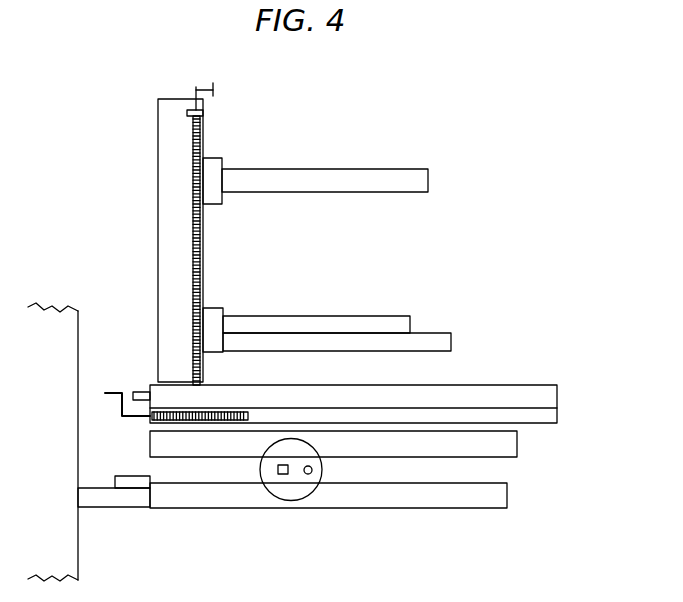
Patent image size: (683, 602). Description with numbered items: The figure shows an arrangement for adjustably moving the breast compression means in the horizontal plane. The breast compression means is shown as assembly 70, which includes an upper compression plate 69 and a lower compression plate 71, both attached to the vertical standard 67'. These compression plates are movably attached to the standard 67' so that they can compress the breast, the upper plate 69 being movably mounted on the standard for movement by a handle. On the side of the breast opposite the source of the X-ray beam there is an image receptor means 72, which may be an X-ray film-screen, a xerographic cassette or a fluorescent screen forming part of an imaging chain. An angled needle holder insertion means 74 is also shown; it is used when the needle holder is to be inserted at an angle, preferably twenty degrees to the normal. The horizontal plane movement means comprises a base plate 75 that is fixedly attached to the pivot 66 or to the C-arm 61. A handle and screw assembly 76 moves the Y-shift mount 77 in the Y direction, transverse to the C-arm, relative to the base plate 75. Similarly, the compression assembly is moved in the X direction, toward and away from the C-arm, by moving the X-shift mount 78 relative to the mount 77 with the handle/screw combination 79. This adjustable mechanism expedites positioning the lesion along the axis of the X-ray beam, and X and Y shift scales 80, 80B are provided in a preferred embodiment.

The C-arm 61 is at (57, 392).
The pivot 66 is at (100, 497).
The vertical standard 67' is at (224, 247).
The upper compression plate 69 is at (418, 169).
The breast compression assembly 70 is at (385, 122).
The lower compression plate 71 is at (391, 316).
The image receptor means 72 is at (443, 333).
The angled needle holder insertion means 74 is at (213, 90).
The base plate 75 is at (507, 495).
The handle and screw assembly 76 is at (294, 486).
The Y-shift mount 77 is at (517, 444).
The X-shift mount 78 is at (547, 387).
The handle/screw combination 79 is at (113, 393).
The X shift scale 80 is at (138, 392).
The Y shift scale 80B is at (133, 483).